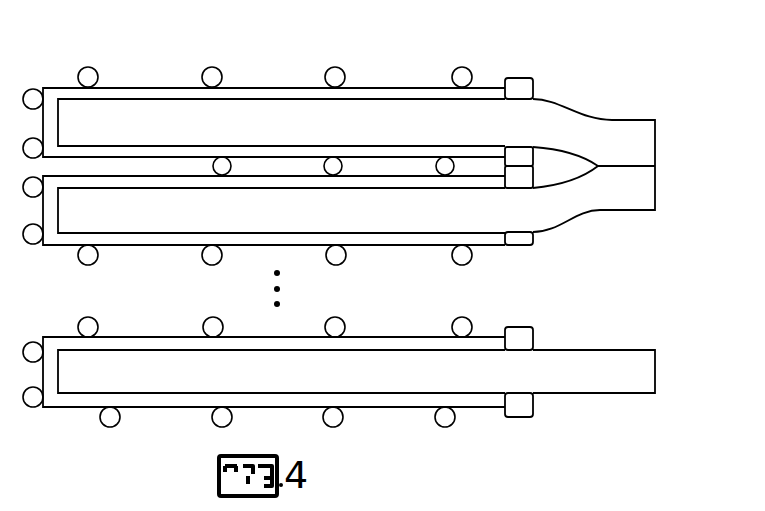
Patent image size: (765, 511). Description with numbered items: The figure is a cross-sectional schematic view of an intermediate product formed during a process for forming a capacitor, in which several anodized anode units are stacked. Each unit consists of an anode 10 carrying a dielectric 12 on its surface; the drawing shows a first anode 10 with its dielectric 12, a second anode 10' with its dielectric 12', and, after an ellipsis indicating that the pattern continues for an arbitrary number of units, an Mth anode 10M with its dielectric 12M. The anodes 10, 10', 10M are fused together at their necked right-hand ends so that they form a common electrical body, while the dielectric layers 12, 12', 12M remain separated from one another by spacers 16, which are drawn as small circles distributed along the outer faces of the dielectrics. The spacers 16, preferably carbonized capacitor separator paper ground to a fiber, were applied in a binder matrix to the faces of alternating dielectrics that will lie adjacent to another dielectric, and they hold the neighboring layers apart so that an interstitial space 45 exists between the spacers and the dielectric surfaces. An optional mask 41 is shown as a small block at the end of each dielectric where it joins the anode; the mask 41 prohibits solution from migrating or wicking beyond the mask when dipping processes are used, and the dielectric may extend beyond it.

The spacers 16 is at (210, 67).
The interstitial space 45 is at (158, 163).
The dielectric 12 is at (296, 100).
The dielectric 12' is at (274, 228).
The dielectric 12M is at (368, 400).
The mask 41 is at (522, 91).
The anode 10 is at (620, 132).
The anode 10' is at (623, 199).
The anode 10M is at (618, 370).